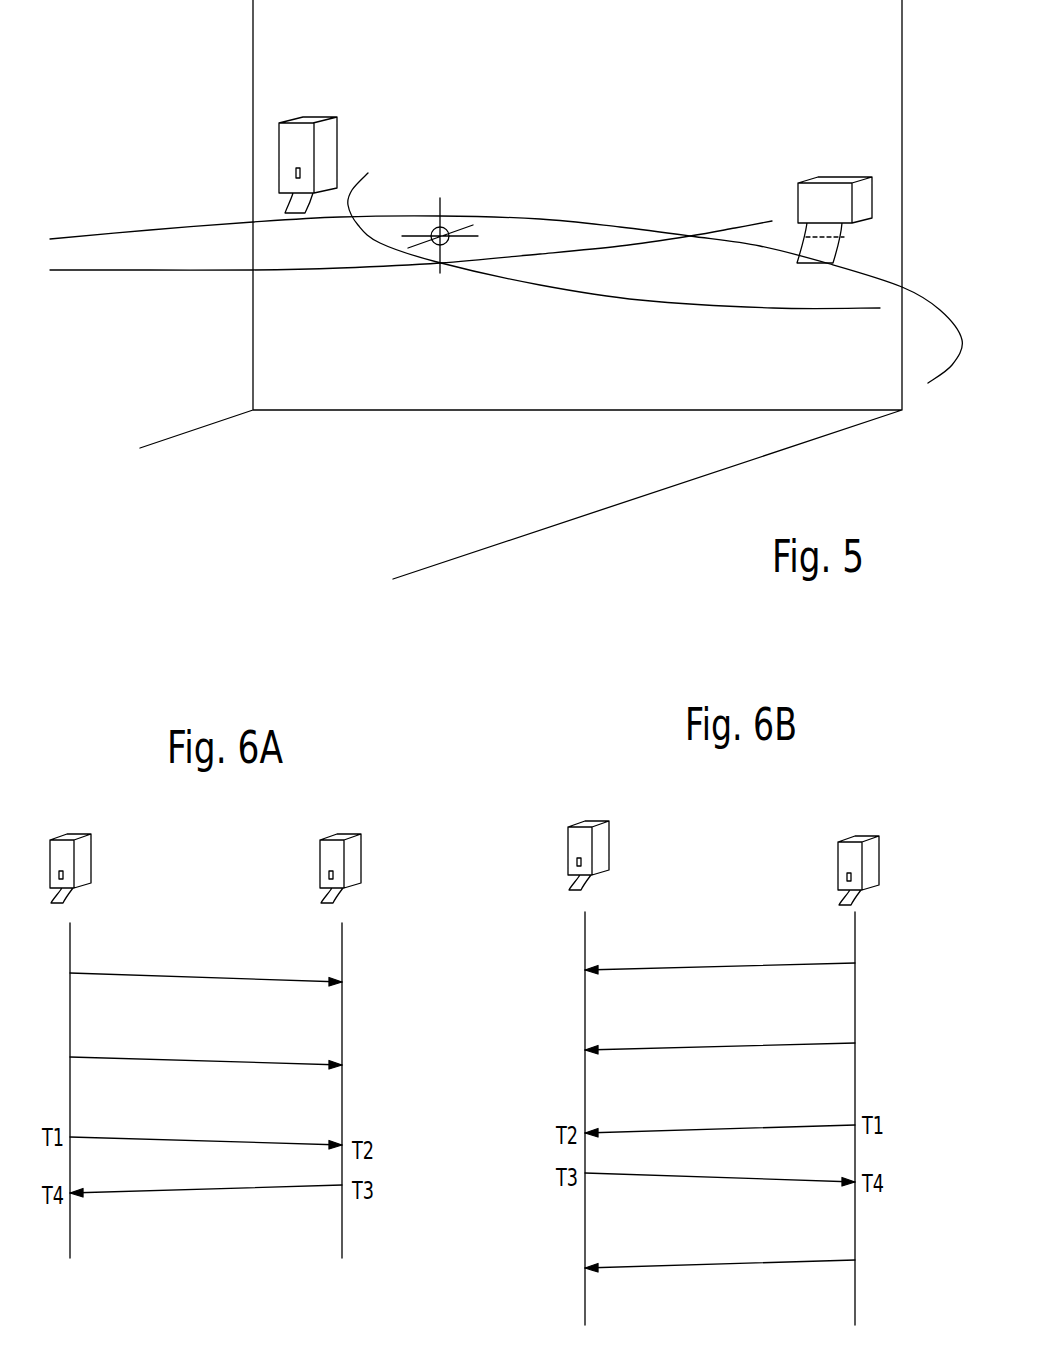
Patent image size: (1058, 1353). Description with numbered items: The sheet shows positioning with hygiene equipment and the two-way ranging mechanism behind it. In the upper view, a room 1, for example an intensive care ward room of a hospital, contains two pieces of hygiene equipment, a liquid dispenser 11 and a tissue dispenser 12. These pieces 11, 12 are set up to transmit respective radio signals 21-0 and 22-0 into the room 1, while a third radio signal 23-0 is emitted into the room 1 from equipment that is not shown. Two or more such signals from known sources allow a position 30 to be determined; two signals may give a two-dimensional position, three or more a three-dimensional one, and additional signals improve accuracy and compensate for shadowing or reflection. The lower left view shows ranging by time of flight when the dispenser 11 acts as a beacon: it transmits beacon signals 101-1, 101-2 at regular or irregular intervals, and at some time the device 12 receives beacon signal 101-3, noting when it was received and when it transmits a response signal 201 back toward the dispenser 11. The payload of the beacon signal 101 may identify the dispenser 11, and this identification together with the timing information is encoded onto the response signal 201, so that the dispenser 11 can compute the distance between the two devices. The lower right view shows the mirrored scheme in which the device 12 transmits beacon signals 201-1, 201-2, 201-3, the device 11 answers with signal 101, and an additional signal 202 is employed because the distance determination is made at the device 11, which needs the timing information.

In FIG. 5, the room 1 is at (521, 289).
In FIG. 5, the liquid dispenser 11 is at (318, 116).
In FIG. 6A, the liquid dispenser 11 is at (92, 845).
In FIG. 6B, the liquid dispenser 11 is at (610, 832).
In FIG. 5, the tissue dispenser 12 is at (842, 175).
In FIG. 6A, the tissue dispenser 12 is at (363, 845).
In FIG. 6B, the tissue dispenser 12 is at (880, 847).
In FIG. 5, the position 30 is at (443, 208).
In FIG. 5, the radio signal 21-0 is at (157, 272).
In FIG. 5, the radio signal 22-0 is at (617, 298).
In FIG. 5, the third radio signal 23-0 is at (560, 220).
In FIG. 6A, the beacon signal 101-1 is at (118, 973).
In FIG. 6A, the beacon signal 101-2 is at (153, 1057).
In FIG. 6A, the beacon signal 101-3 is at (177, 1137).
In FIG. 6A, the response signal 201 is at (147, 1193).
In FIG. 6B, the beacon signal 201-1 is at (808, 962).
In FIG. 6B, the beacon signal 201-2 is at (773, 1043).
In FIG. 6B, the beacon signal 201-3 is at (750, 1125).
In FIG. 6B, the beacon signal 101 is at (782, 1182).
In FIG. 6B, the additional signal 202 is at (700, 1263).